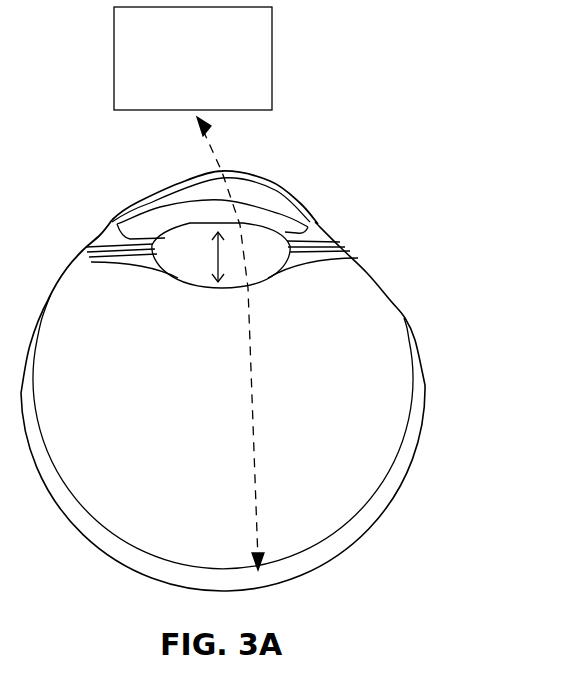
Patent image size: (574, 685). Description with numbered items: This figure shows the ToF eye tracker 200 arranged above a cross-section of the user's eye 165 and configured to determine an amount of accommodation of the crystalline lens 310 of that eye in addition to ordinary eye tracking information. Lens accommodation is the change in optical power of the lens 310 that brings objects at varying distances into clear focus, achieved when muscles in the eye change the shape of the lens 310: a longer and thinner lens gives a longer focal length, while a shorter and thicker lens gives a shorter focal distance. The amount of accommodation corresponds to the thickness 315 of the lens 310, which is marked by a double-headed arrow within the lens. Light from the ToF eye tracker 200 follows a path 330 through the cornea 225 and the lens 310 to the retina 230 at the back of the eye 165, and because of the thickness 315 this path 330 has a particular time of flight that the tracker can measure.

The ToF eye tracker 200 is at (193, 58).
The eye 165 is at (410, 507).
The retina 230 is at (142, 550).
The cornea 225 is at (175, 182).
The lens 310 is at (268, 265).
The thickness 315 is at (210, 260).
The path 330 is at (223, 152).